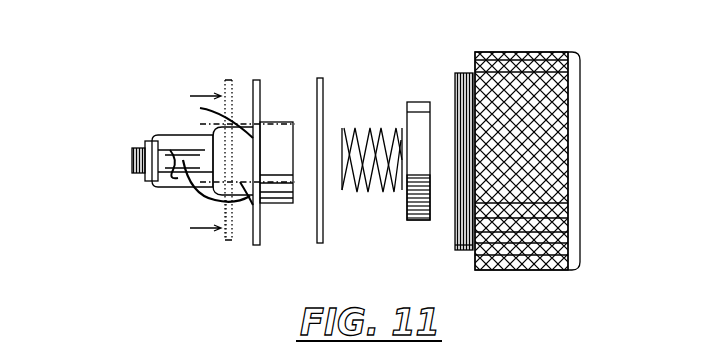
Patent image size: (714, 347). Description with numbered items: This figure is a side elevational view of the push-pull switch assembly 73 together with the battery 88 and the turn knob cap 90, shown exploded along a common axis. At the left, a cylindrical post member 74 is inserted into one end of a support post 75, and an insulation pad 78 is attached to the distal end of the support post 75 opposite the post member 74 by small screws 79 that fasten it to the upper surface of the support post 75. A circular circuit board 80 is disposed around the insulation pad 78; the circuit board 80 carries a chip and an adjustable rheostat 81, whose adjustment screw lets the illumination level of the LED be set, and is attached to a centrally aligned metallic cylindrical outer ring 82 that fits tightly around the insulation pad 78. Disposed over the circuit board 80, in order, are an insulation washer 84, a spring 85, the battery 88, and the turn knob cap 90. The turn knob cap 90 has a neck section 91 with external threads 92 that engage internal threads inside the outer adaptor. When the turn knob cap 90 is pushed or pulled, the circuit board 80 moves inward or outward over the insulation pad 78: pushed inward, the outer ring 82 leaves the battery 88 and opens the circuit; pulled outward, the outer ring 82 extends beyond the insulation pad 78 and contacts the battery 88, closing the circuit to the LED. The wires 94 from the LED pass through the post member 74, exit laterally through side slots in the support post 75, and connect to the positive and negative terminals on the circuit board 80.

The push-pull switch assembly 73 is at (194, 82).
The cylindrical post member 74 is at (143, 154).
The support post 75 is at (170, 174).
The insulation pad 78 is at (237, 138).
The small screws 79 is at (257, 128).
The circular circuit board 80 is at (238, 118).
The adjustable rheostat 81 is at (228, 243).
The outer ring 82 is at (298, 128).
The insulation washer 84 is at (324, 225).
The spring 85 is at (362, 127).
The battery 88 is at (415, 112).
The turn knob cap 90 is at (556, 130).
The neck section 91 is at (466, 250).
The external threads 92 is at (463, 72).
The wires 94 is at (185, 170).